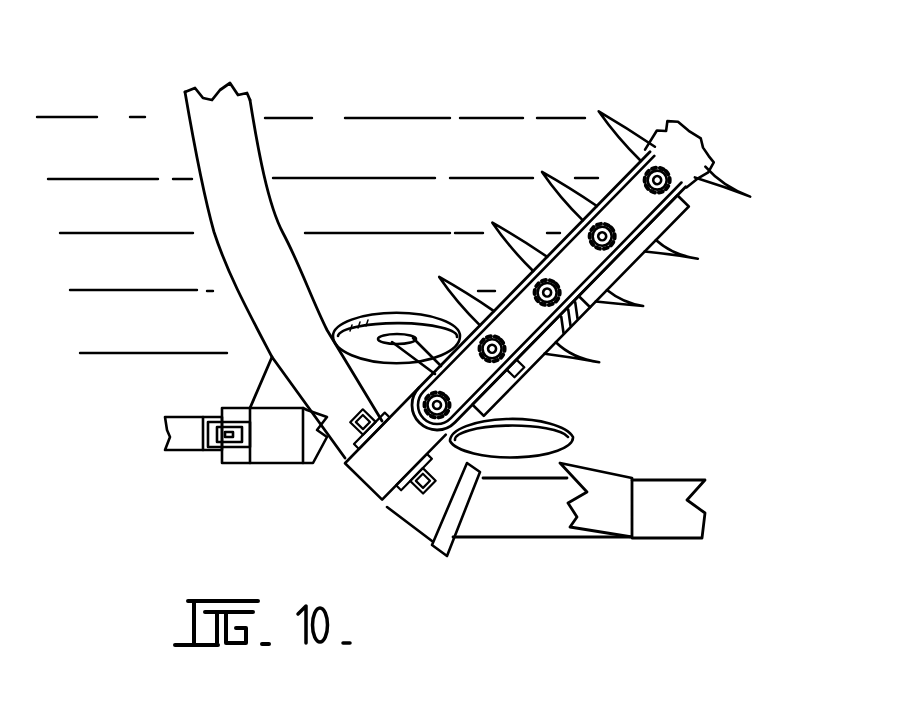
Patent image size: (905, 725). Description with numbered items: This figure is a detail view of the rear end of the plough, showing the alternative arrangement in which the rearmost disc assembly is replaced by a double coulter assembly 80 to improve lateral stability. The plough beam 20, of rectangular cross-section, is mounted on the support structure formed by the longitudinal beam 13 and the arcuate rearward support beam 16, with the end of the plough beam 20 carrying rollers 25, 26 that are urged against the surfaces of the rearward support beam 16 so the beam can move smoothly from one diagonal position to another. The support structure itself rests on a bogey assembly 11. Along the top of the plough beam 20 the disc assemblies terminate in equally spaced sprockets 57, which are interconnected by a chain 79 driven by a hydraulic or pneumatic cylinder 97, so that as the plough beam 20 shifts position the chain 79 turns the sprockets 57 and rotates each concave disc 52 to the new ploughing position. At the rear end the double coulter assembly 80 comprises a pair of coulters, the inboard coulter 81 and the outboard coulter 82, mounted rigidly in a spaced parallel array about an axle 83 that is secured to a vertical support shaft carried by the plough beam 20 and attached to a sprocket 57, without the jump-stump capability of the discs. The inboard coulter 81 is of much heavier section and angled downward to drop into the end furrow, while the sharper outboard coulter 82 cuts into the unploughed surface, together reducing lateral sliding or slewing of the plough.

The forward bogey assembly 11 is at (313, 292).
The longitudinal beam 13 is at (533, 515).
The arcuate rearward support beam 16 is at (220, 117).
The plough beam 20 is at (688, 148).
The roller 25 is at (377, 497).
The roller 26 is at (357, 468).
The concave disc 52 is at (583, 367).
The sprocket 57 is at (517, 372).
The chain 79 is at (693, 188).
The double coulter assembly 80 is at (332, 386).
The inboard coulter 81 is at (428, 340).
The outboard coulter 82 is at (545, 443).
The axle 83 is at (357, 375).
The hydraulic or pneumatic cylinder 97 is at (632, 262).